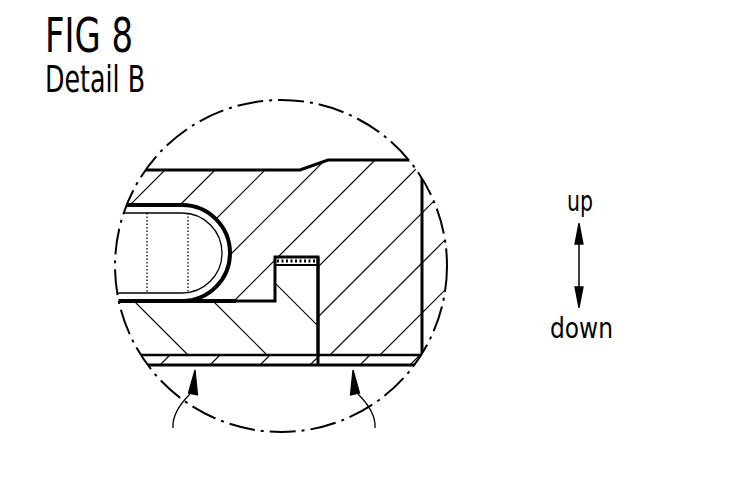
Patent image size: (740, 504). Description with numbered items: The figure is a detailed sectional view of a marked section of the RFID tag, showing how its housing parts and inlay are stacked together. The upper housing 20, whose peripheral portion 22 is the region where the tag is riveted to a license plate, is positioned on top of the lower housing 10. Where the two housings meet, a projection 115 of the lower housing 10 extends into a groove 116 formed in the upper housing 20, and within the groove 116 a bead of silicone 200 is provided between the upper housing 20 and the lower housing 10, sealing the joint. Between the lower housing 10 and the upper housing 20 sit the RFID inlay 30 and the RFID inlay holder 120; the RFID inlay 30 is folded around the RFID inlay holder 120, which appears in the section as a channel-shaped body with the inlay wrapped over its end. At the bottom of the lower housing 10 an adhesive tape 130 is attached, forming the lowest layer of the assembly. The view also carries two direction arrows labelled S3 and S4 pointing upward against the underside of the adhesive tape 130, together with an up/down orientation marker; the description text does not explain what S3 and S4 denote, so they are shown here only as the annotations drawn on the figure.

The lower housing 10 is at (296, 326).
The upper housing 20 is at (367, 250).
The peripheral portion 22 is at (410, 203).
The RFID inlay 30 is at (133, 204).
The projection 115 is at (300, 287).
The groove 116 is at (310, 176).
The RFID inlay holder 120 is at (137, 225).
The adhesive tape 130 is at (148, 362).
The silicone 200 is at (303, 256).
The direction arrow S3 is at (372, 417).
The direction arrow S4 is at (178, 417).